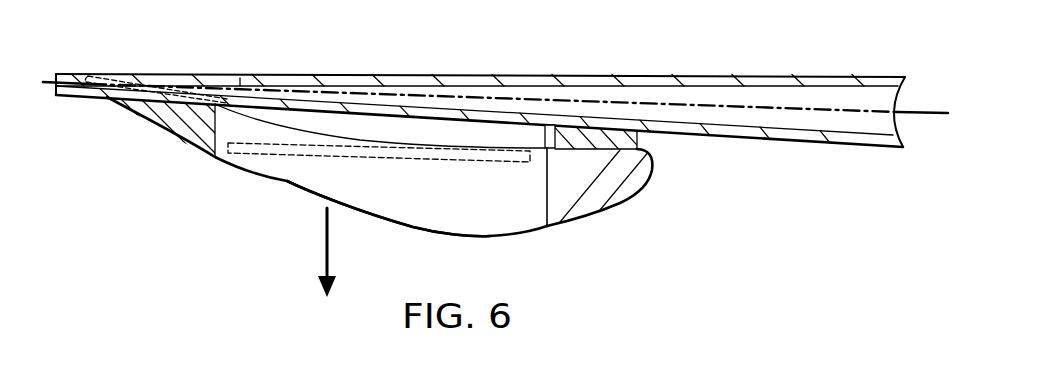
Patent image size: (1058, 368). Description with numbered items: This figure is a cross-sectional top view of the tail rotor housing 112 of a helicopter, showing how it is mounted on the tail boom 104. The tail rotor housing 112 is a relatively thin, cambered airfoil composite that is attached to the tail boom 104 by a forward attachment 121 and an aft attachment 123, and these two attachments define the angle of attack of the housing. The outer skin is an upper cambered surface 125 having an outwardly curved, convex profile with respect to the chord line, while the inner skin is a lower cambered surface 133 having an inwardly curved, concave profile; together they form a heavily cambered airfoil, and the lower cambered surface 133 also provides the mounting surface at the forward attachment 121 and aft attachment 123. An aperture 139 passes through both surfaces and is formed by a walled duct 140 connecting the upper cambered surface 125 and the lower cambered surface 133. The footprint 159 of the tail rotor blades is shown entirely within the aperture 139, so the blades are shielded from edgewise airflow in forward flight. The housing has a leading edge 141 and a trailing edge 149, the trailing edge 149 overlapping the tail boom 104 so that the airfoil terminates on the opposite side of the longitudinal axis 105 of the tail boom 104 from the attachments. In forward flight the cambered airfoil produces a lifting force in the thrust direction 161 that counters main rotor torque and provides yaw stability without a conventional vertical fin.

The tail boom 104 is at (807, 74).
The longitudinal axis 105 is at (929, 111).
The trailing edge 149 is at (78, 75).
The aft attachment 123 is at (215, 106).
The lower cambered surface 133 is at (548, 126).
The forward attachment 121 is at (643, 140).
The leading edge 141 is at (664, 175).
The tail rotor housing 112 is at (628, 238).
The aperture 139 is at (479, 203).
The walled duct 140 is at (547, 206).
The upper cambered surface 125 is at (433, 231).
The footprint of the tail rotor blades 159 is at (262, 154).
The thrust direction 161 is at (325, 243).